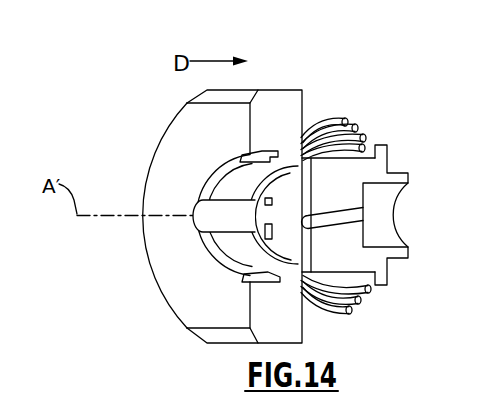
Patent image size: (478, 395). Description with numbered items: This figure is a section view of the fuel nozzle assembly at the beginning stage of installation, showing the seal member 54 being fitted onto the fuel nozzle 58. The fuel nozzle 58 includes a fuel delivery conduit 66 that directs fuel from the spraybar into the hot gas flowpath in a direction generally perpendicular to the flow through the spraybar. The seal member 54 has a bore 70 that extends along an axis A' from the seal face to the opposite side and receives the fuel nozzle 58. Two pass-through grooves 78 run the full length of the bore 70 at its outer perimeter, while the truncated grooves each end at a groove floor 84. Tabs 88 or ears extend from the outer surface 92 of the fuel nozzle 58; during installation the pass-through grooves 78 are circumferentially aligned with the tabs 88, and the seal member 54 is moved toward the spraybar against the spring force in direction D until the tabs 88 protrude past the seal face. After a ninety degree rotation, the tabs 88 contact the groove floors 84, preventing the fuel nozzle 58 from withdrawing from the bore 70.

The seal member 54 is at (272, 107).
The fuel nozzle 58 is at (328, 177).
The fuel delivery conduit 66 is at (345, 232).
The bore 70 is at (218, 189).
The pass-through grooves 78 is at (195, 225).
The groove floor 84 is at (260, 151).
The tabs 88 is at (224, 264).
The outer surface 92 is at (339, 288).